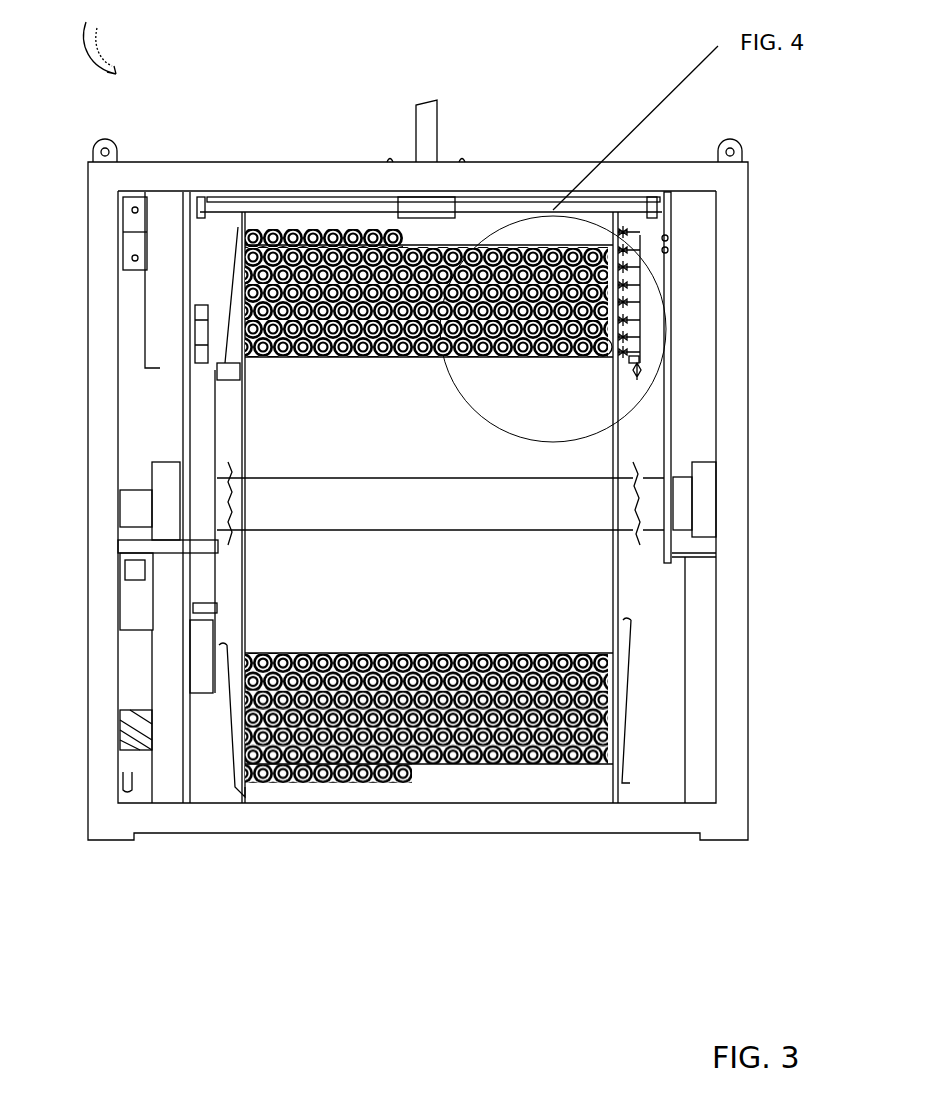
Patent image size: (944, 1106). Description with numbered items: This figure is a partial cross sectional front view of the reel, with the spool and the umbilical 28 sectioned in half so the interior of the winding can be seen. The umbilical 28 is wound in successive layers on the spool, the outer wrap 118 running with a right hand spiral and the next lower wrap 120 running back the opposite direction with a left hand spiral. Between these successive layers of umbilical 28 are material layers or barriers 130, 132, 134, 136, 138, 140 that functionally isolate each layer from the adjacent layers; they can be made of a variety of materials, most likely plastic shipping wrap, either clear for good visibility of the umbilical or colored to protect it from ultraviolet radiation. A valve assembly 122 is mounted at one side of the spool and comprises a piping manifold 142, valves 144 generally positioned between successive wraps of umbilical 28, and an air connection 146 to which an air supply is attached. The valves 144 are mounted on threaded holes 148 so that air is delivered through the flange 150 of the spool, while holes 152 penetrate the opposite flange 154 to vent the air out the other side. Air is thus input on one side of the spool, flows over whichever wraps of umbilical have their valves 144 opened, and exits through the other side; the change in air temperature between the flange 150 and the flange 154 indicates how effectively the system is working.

The umbilical 28 is at (505, 770).
The outer wrap 118 is at (280, 216).
The next lower wrap 120 is at (468, 246).
The valve assembly 122 is at (642, 280).
The barrier 130 is at (613, 766).
The barrier 132 is at (613, 749).
The barrier 134 is at (613, 730).
The barrier 136 is at (613, 711).
The barrier 138 is at (613, 692).
The barrier 140 is at (613, 672).
The piping manifold 142 is at (638, 328).
The valves 144 is at (635, 303).
The air connection 146 is at (648, 383).
The threaded holes 148 is at (600, 355).
The flange 150 is at (632, 362).
The holes 152 is at (240, 308).
The flange 154 is at (238, 422).